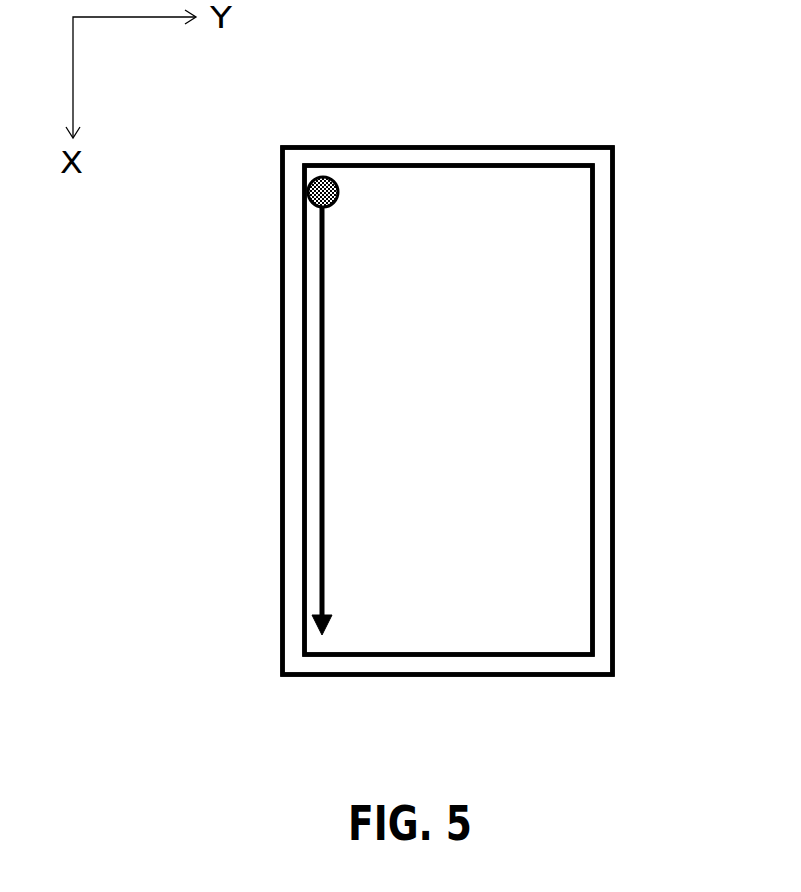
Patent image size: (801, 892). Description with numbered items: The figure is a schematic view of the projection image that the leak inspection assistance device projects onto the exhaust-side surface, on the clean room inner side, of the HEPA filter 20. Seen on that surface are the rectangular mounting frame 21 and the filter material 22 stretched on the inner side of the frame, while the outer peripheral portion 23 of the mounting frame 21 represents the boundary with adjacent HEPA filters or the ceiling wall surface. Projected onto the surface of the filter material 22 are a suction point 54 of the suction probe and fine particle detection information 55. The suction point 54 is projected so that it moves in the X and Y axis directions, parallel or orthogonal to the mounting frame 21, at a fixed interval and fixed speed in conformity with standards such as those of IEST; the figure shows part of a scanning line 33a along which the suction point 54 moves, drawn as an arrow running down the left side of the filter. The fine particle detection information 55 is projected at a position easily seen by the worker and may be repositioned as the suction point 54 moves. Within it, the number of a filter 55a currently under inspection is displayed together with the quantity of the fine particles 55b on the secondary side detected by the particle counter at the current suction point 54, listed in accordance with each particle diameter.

The HEPA filter 20 is at (653, 327).
The mounting frame 21 is at (607, 558).
The filter material 22 is at (542, 443).
The outer peripheral portion 23 is at (613, 417).
The scanning line 33a is at (320, 425).
The suction point 54 is at (307, 192).
The fine particle detection information 55 is at (500, 182).
The number of a filter 55a is at (583, 200).
The quantity of the fine particles 55b is at (563, 245).